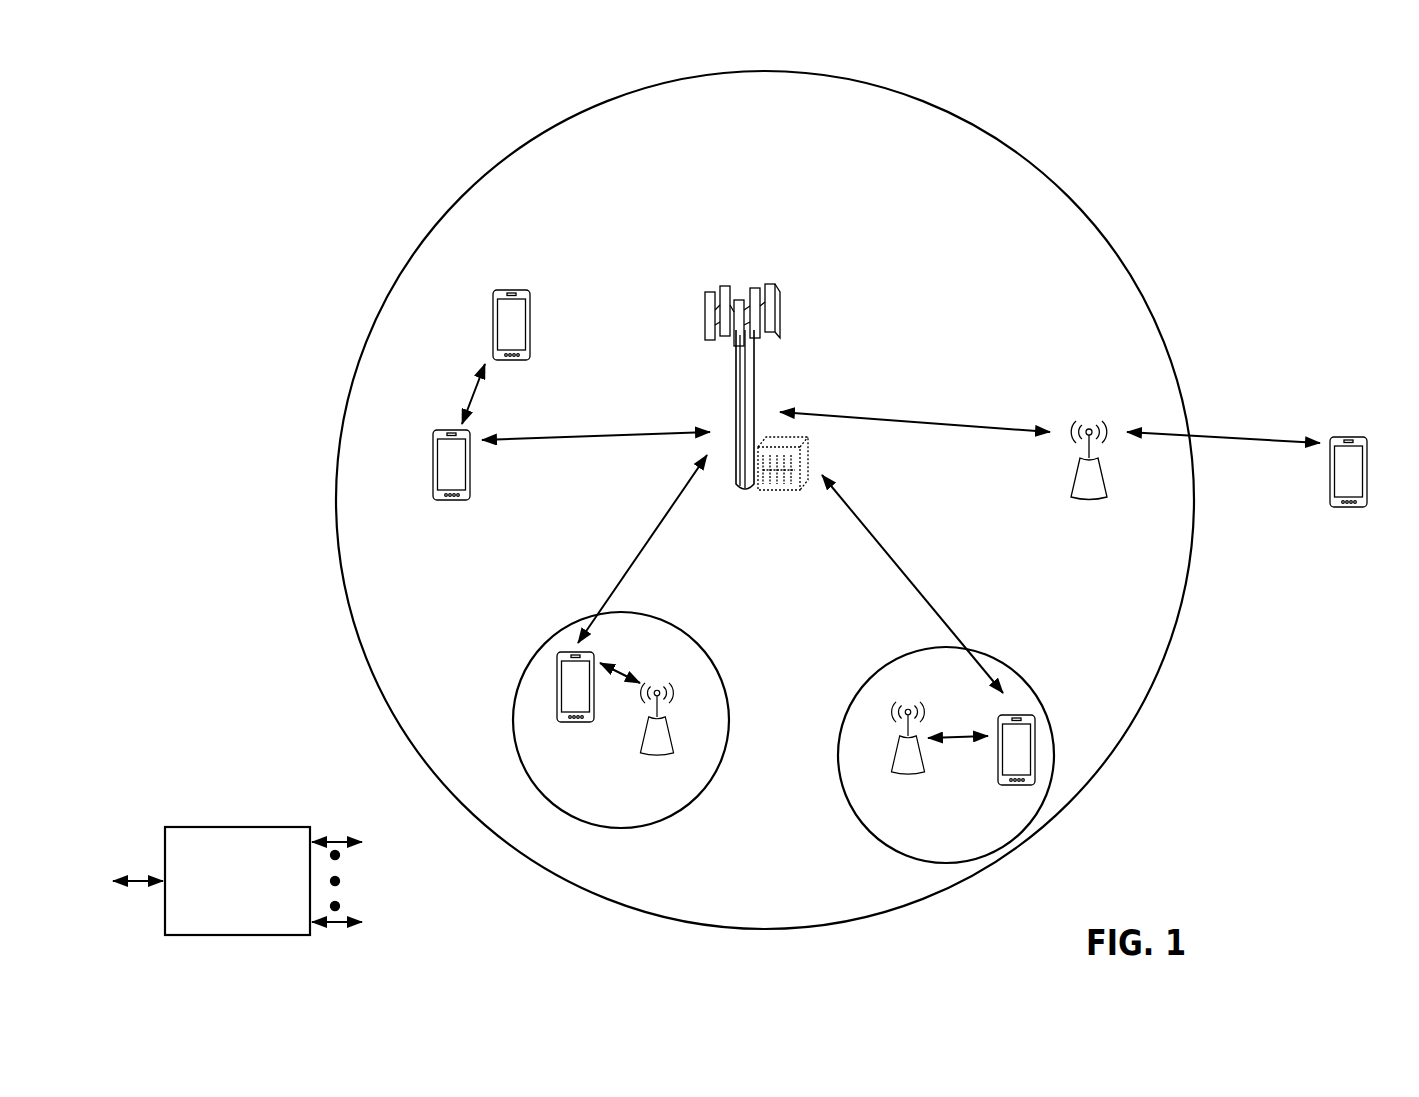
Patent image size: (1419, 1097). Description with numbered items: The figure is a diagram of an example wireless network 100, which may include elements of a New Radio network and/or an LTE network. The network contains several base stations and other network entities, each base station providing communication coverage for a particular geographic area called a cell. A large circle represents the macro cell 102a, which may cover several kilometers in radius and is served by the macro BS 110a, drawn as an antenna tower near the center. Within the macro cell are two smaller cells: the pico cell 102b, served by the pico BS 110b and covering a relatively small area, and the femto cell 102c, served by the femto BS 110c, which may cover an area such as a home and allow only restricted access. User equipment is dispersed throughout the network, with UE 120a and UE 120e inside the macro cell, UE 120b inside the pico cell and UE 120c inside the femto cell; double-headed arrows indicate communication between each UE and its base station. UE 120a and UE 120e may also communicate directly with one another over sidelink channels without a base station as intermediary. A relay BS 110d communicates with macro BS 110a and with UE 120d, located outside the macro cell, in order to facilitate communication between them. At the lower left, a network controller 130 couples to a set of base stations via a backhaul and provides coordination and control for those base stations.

The wireless network 100 is at (222, 68).
The macro cell 102a is at (1050, 178).
The pico cell 102b is at (712, 660).
The femto cell 102c is at (882, 668).
The macro BS 110a is at (752, 278).
The pico BS 110b is at (680, 762).
The femto BS 110c is at (892, 776).
The relay BS 110d is at (1090, 424).
The UE 120a is at (433, 462).
The UE 120b is at (566, 722).
The UE 120c is at (1003, 783).
The UE 120d is at (1360, 437).
The UE 120e is at (493, 310).
The network controller 130 is at (236, 827).